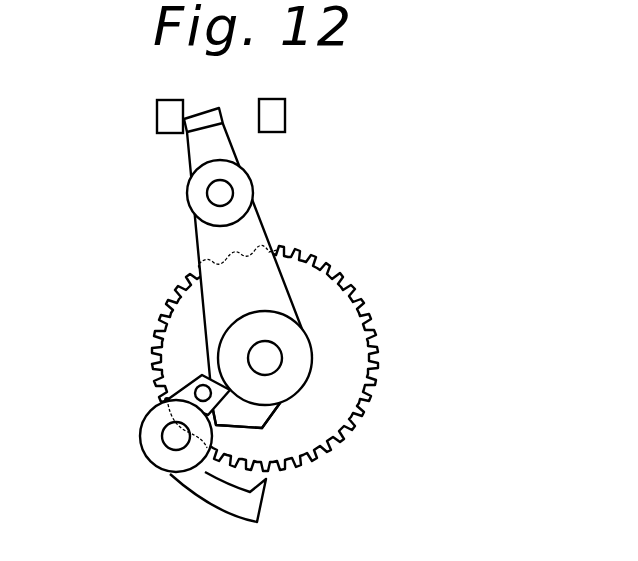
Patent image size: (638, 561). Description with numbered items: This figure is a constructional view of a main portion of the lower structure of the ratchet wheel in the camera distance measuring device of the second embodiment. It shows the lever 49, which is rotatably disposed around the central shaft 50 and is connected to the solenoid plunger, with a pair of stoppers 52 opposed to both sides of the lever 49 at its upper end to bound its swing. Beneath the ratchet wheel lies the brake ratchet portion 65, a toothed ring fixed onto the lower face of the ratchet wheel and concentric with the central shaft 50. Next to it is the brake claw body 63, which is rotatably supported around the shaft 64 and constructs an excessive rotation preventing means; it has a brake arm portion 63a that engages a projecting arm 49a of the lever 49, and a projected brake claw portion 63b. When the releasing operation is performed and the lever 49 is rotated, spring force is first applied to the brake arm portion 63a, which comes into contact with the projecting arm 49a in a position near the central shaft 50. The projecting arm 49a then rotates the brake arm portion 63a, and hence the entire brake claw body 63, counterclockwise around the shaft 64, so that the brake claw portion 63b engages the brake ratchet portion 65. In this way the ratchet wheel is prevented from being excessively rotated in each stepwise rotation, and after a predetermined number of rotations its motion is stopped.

The lever 49 is at (268, 214).
The projecting arm 49a is at (252, 433).
The central shaft 50 is at (276, 357).
The stoppers 52 is at (165, 113).
The brake claw body 63 is at (143, 427).
The brake arm portion 63a is at (190, 378).
The brake claw portion 63b is at (177, 489).
The shaft 64 is at (173, 442).
The brake ratchet portion 65 is at (323, 266).